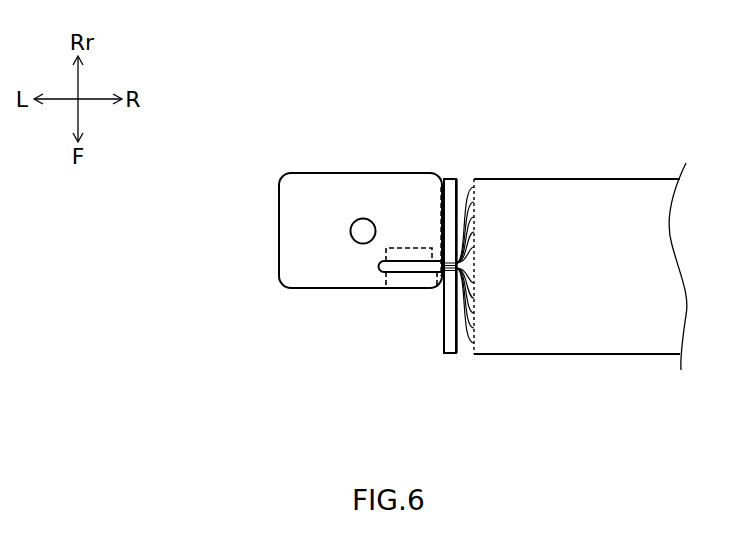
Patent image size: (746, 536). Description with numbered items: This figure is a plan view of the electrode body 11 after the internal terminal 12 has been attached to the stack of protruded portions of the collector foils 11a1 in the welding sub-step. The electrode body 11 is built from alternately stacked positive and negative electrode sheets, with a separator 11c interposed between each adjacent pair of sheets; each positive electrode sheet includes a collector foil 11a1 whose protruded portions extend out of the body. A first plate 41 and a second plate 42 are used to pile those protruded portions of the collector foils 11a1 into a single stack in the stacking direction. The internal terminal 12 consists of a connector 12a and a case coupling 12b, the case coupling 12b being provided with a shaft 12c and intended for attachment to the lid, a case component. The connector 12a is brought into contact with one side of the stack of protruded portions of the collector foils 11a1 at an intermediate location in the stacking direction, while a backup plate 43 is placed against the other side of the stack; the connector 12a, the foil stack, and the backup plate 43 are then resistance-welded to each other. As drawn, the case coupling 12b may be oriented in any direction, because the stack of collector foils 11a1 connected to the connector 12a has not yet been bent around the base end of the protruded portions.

The electrode body 11 is at (622, 177).
The collector foil 11a1 is at (377, 265).
The separator 11c is at (559, 355).
The internal terminal 12 is at (290, 133).
The connector 12a is at (377, 289).
The case coupling 12b is at (295, 208).
The shaft 12c is at (362, 218).
The first plate 41 is at (450, 354).
The second plate 42 is at (456, 178).
The backup plate 43 is at (407, 247).